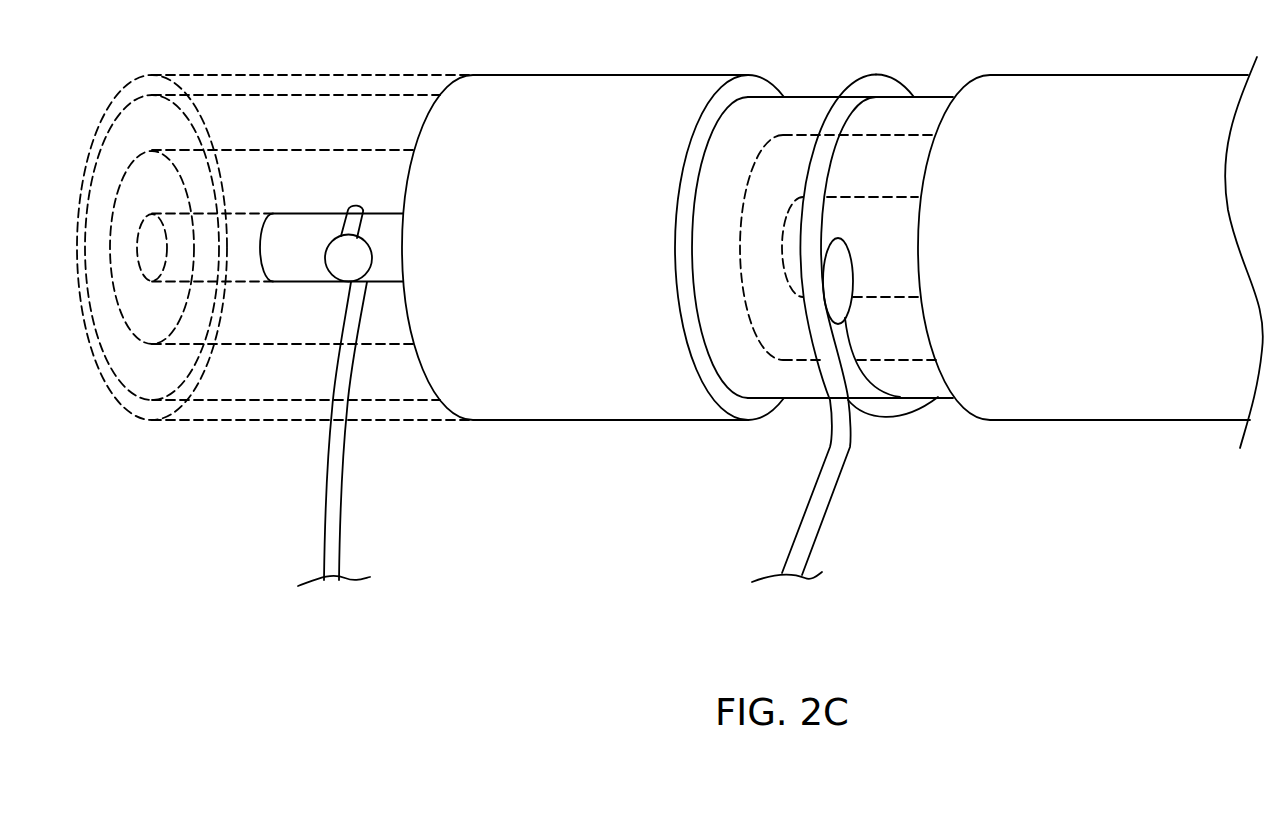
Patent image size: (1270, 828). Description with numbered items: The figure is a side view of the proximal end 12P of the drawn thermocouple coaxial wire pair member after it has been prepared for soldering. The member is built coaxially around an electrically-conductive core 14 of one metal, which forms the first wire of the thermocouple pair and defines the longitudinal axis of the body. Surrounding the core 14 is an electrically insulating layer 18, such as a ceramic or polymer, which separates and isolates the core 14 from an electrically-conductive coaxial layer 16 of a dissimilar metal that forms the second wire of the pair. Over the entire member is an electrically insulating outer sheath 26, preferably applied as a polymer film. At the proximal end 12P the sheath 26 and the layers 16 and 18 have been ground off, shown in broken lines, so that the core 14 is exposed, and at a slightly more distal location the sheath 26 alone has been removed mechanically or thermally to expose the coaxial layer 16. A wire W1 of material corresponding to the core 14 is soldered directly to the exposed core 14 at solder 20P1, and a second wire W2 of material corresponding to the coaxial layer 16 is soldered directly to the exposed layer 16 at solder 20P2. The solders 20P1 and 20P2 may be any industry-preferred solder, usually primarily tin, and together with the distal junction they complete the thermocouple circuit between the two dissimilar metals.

The proximal end 12P is at (176, 490).
The electrically-conductive core 14 is at (305, 252).
The electrically-conductive coaxial layer 16 is at (392, 108).
The electrically insulating layer 18 is at (315, 167).
The electrically insulating outer sheath 26 is at (237, 83).
The solder 20P1 is at (370, 257).
The solder 20P2 is at (840, 268).
The wire W1 is at (330, 520).
The wire W2 is at (813, 520).